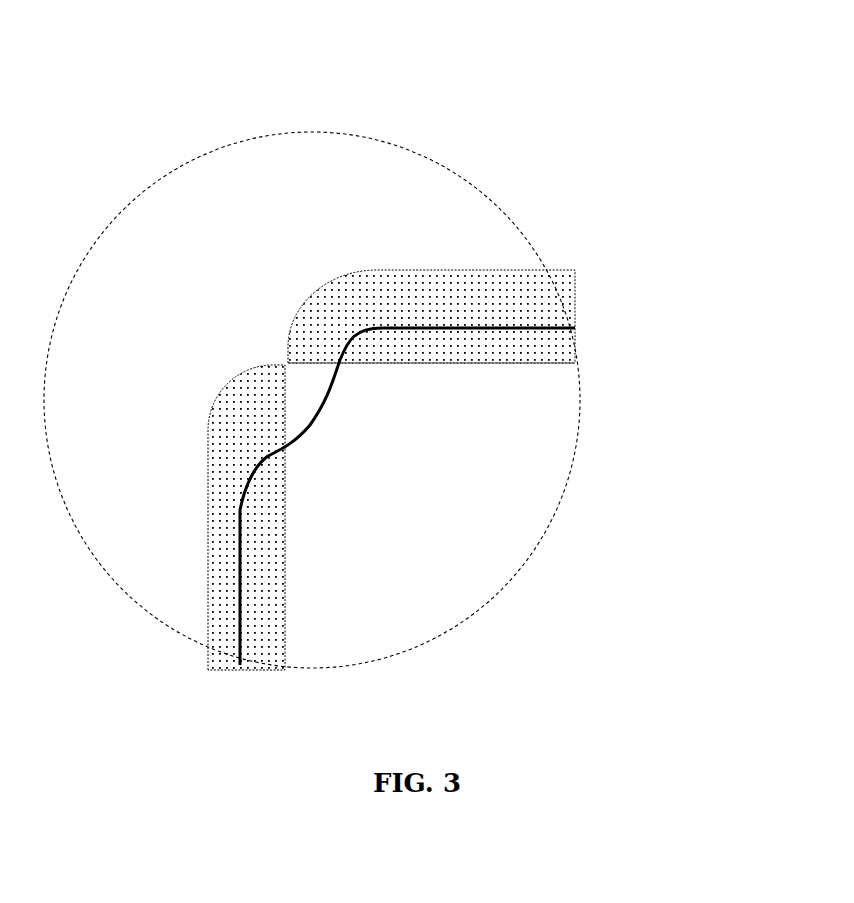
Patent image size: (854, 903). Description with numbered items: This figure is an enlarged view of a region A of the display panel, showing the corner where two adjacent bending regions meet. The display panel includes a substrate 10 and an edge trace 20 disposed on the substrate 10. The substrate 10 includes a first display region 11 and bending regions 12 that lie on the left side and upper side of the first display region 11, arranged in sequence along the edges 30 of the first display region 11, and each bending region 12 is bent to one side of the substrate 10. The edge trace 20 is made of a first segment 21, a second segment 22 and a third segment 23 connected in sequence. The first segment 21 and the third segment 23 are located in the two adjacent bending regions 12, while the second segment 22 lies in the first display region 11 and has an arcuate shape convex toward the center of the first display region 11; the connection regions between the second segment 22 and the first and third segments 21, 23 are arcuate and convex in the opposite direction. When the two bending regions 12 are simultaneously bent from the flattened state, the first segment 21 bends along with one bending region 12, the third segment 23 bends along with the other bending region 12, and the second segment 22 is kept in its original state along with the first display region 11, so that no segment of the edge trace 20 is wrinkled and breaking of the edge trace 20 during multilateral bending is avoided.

The region A is at (282, 134).
The substrate 10 is at (522, 342).
The first display region 11 is at (558, 403).
The bending region 12 is at (563, 347).
The edge trace 20 is at (240, 617).
The first segment 21 is at (240, 662).
The second segment 22 is at (220, 407).
The third segment 23 is at (575, 372).
The edge 30 is at (285, 563).